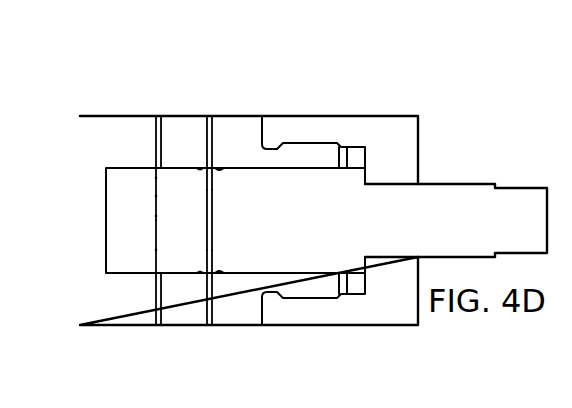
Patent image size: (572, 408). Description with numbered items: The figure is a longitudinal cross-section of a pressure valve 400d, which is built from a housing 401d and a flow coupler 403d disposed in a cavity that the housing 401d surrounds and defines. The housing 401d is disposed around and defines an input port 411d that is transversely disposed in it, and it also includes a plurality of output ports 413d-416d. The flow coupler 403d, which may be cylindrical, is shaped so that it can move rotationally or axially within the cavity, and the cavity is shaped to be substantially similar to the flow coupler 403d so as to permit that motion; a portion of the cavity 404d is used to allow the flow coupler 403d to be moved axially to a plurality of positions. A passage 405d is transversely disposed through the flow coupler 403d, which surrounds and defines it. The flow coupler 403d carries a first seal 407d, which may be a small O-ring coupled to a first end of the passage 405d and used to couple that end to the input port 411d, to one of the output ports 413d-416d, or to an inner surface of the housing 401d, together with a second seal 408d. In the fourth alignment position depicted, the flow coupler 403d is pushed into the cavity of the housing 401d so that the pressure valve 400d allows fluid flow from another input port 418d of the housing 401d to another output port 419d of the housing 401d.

The pressure valve 400d is at (290, 43).
The housing 401d is at (92, 136).
The flow coupler 403d is at (453, 225).
The portion of the cavity 404d is at (125, 203).
The passage 405d is at (205, 222).
The first seal 407d is at (195, 290).
The second seal 408d is at (222, 151).
The input port 411d is at (224, 335).
The plurality of output ports 413d-416d is at (211, 102).
The another input port 418d is at (144, 335).
The another output port 419d is at (151, 102).